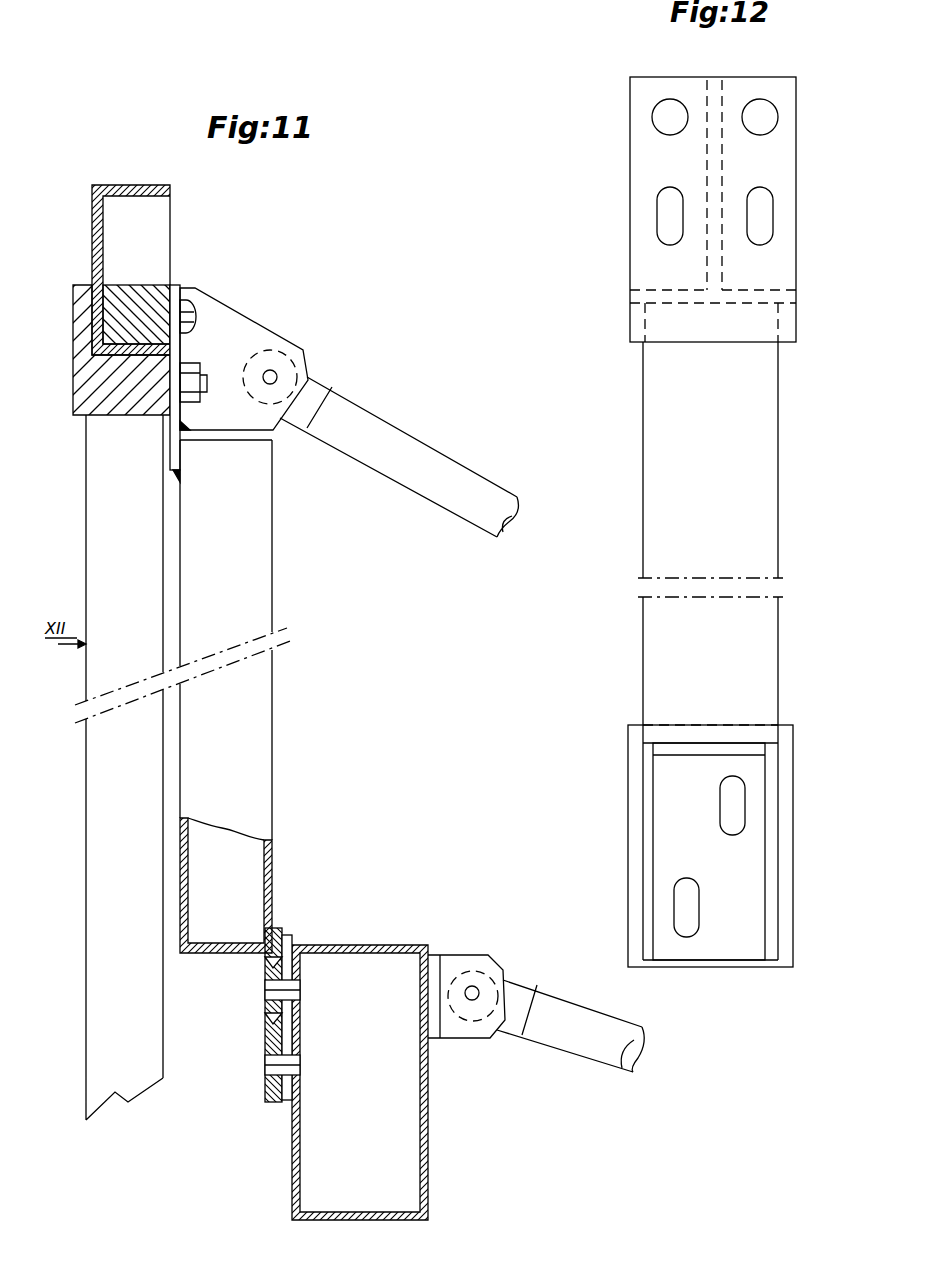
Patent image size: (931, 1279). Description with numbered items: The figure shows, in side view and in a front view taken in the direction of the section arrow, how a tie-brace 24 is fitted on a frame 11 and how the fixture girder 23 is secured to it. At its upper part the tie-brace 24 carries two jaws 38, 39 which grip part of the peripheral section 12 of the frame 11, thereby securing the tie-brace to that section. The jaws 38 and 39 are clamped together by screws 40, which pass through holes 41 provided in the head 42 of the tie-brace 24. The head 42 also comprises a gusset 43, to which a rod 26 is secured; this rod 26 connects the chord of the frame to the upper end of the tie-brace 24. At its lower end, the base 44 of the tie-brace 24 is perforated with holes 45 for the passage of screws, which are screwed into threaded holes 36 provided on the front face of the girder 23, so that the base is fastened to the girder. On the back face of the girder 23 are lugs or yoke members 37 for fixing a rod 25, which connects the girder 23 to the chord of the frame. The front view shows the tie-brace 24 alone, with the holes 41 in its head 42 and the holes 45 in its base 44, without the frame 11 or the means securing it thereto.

In FIG. 11, the frame 11 is at (80, 817).
In FIG. 11, the peripheral section 12 is at (131, 184).
In FIG. 11, the girder 23 is at (353, 963).
In FIG. 11, the tie-brace 24 is at (261, 586).
In FIG. 12, the tie-brace 24 is at (636, 433).
In FIG. 11, the rod 25 is at (553, 1000).
In FIG. 11, the rod 26 is at (403, 437).
In FIG. 11, the threaded holes 36 is at (288, 988).
In FIG. 11, the lugs or yoke members 37 is at (473, 962).
In FIG. 11, the jaw 38 is at (83, 403).
In FIG. 11, the jaw 39 is at (140, 308).
In FIG. 11, the screws 40 is at (189, 310).
In FIG. 12, the holes 41 is at (665, 218).
In FIG. 12, the head 42 is at (645, 155).
In FIG. 11, the gusset 43 is at (247, 337).
In FIG. 12, the gusset 43 is at (715, 240).
In FIG. 11, the base 44 is at (327, 1028).
In FIG. 12, the base 44 is at (740, 890).
In FIG. 12, the holes 45 is at (685, 882).